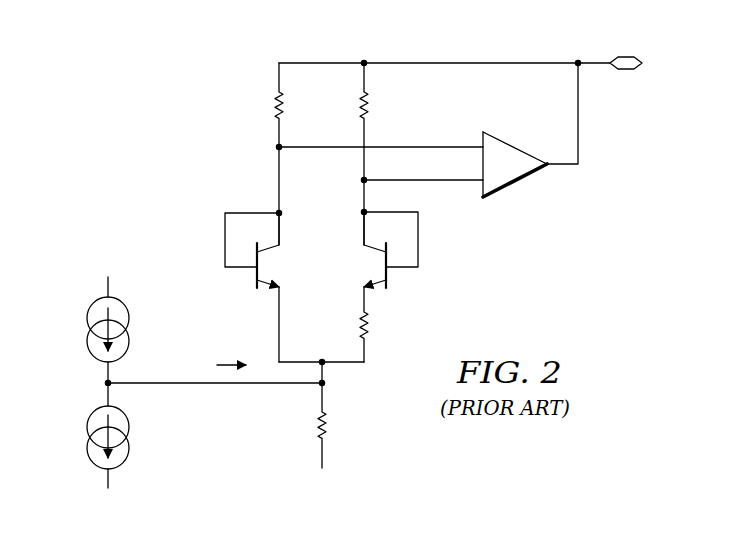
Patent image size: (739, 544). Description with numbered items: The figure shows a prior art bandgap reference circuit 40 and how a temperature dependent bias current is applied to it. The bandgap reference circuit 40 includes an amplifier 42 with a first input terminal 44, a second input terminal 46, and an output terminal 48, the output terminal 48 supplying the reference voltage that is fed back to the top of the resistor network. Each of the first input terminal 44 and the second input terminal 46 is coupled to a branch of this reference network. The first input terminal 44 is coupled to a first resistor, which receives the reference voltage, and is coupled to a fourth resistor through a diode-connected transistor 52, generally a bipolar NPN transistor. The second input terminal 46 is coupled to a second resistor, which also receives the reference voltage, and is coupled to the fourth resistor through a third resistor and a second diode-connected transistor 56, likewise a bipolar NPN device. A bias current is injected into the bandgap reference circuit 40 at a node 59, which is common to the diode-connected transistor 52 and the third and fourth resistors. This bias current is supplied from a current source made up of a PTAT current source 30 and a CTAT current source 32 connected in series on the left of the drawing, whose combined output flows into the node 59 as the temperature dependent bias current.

The bandgap reference circuit 40 is at (131, 139).
The PTAT current source 30 is at (88, 317).
The CTAT current source 32 is at (88, 450).
The amplifier 42 is at (515, 146).
The first input terminal 44 is at (322, 149).
The second input terminal 46 is at (442, 182).
The output terminal 48 is at (579, 123).
The diode-connected transistor 52 is at (257, 269).
The diode-connected transistor 56 is at (386, 269).
The node 59 is at (318, 389).